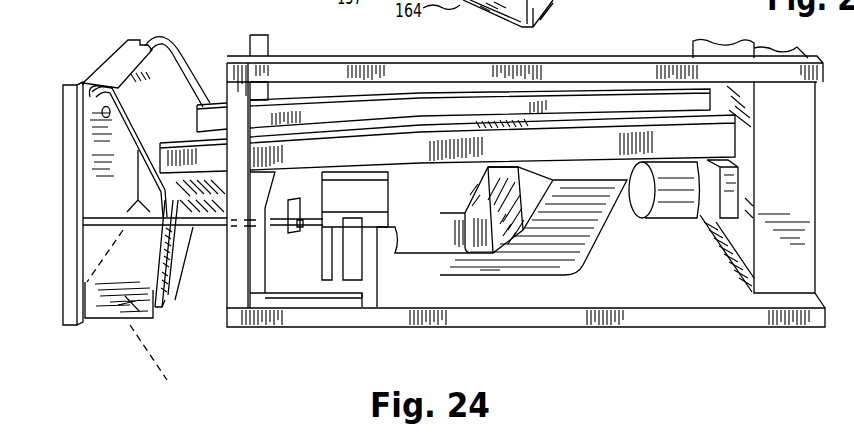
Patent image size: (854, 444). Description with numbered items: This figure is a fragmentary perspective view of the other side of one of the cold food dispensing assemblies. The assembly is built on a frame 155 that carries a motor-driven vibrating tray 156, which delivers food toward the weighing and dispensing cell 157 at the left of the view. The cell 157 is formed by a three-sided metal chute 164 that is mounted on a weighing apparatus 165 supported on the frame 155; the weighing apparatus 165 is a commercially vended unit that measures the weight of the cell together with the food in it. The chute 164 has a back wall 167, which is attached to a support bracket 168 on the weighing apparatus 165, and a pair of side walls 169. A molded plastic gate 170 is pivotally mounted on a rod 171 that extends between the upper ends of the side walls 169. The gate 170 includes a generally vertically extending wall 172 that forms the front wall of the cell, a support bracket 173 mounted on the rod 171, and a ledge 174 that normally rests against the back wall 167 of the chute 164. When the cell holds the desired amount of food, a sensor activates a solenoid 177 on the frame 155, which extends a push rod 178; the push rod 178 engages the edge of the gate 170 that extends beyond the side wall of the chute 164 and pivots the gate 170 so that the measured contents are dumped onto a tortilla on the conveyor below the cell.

The frame 155 is at (648, 318).
The motor-driven vibrating tray 156 is at (720, 143).
The weighing and dispensing cell 157 is at (95, 36).
The three-sided metal chute 164 is at (107, 322).
The weighing apparatus 165 is at (533, 263).
The back wall 167 is at (162, 307).
The support bracket 168 is at (180, 263).
The side walls 169 is at (180, 72).
The molded plastic gate 170 is at (70, 272).
The rod 171 is at (100, 86).
The generally vertically extending wall 172 is at (63, 222).
The support bracket 173 is at (100, 70).
The ledge 174 is at (159, 361).
The solenoid 177 is at (395, 215).
The push rod 178 is at (100, 250).